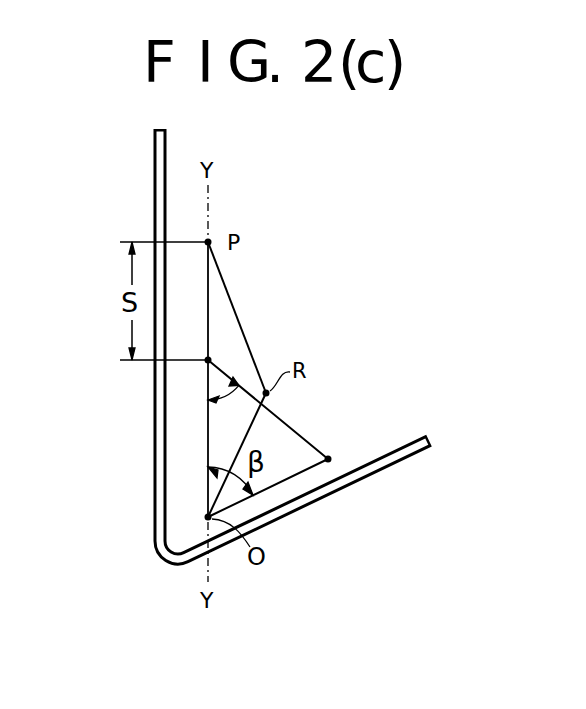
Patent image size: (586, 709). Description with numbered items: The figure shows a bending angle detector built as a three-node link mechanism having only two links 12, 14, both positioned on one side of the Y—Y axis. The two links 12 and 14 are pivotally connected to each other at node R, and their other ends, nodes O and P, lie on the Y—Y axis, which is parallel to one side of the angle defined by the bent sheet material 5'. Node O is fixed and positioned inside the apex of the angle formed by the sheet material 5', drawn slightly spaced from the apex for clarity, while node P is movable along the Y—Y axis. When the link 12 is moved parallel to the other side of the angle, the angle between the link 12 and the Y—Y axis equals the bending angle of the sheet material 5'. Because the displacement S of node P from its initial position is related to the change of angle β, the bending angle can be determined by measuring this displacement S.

The link 14 is at (241, 326).
The link 12 is at (249, 431).
The bent sheet material 5' is at (294, 344).